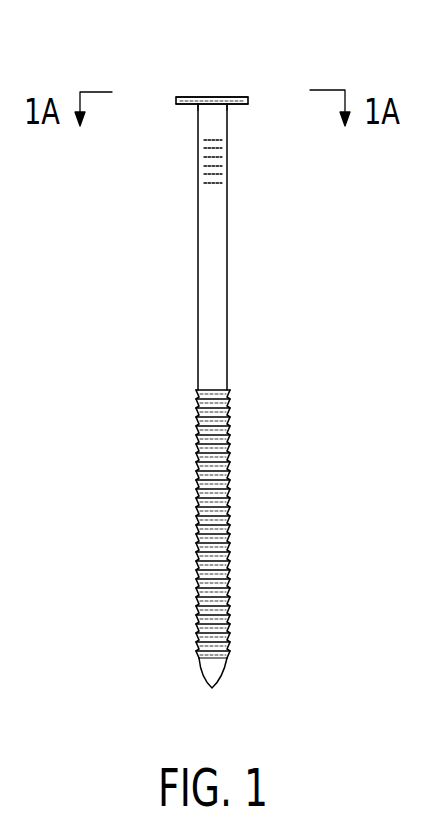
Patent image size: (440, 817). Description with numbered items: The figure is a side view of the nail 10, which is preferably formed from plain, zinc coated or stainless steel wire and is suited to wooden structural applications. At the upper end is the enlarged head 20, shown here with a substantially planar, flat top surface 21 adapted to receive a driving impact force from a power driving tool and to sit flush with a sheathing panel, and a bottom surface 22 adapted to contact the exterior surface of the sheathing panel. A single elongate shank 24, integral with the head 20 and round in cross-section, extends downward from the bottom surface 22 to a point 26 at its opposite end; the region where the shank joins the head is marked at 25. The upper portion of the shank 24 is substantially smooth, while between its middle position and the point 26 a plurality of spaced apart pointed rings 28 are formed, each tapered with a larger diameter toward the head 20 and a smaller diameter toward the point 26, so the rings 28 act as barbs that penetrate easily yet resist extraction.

The nail 10 is at (230, 188).
The enlarged head 20 is at (233, 97).
The top surface 21 is at (193, 97).
The bottom surface 22 is at (183, 106).
The shank 24 is at (227, 328).
The junction of head and shank 25 is at (228, 108).
The point 26 is at (213, 688).
The pointed rings 28 is at (228, 532).